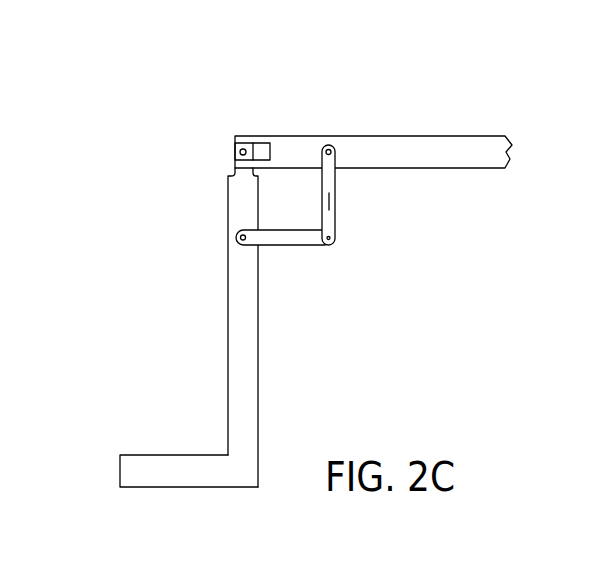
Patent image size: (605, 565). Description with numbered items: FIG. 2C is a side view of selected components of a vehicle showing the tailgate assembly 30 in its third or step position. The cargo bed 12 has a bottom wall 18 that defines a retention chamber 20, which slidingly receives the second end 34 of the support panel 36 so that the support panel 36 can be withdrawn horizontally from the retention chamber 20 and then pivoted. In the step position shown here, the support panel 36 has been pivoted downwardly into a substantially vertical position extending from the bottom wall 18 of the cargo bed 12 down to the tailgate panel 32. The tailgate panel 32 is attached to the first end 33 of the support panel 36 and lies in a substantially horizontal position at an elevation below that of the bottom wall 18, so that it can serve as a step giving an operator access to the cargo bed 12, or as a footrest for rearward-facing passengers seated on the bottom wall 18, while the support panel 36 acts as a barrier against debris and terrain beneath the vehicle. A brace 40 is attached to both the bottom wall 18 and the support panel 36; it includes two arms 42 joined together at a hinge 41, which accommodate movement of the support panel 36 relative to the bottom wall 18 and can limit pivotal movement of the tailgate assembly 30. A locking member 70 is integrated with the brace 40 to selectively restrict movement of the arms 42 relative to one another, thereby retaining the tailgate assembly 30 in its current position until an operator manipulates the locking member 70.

The cargo bed 12 is at (373, 100).
The bottom wall 18 is at (439, 146).
The retention chamber 20 is at (254, 138).
The tailgate assembly 30 is at (141, 346).
The tailgate panel 32 is at (170, 488).
The first end 33 is at (162, 410).
The second end 34 is at (172, 164).
The support panel 36 is at (228, 283).
The brace 40 is at (336, 219).
The hinge 41 is at (332, 247).
The arms 42 is at (288, 230).
The locking member 70 is at (331, 202).